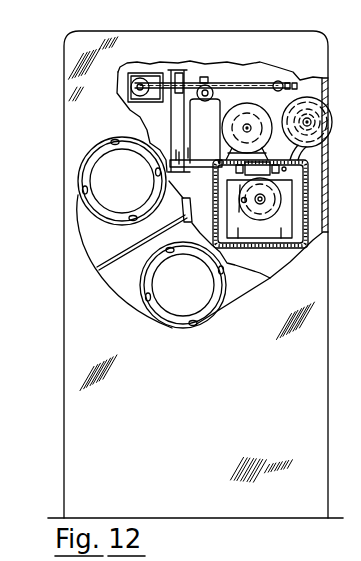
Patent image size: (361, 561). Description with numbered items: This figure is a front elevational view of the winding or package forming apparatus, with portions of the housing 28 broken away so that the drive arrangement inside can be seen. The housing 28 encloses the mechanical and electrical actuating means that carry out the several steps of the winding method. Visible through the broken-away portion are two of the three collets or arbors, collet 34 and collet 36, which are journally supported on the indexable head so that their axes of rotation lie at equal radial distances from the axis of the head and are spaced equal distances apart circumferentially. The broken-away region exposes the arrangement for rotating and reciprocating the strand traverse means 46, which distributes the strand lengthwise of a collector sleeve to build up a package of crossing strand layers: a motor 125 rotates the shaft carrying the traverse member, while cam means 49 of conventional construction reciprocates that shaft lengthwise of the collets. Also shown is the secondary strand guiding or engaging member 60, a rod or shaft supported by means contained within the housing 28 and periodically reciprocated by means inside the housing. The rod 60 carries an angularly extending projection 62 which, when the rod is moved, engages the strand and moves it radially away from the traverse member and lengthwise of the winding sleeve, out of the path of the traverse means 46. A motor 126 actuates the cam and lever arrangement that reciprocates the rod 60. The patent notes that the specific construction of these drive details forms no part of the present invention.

The housing 28 is at (63, 44).
The motor 126 is at (182, 132).
The collet 36 is at (103, 167).
The collet 34 is at (178, 316).
The motor 125 is at (240, 103).
The secondary strand guiding member 60 is at (278, 82).
The angularly extending projection 62 is at (295, 86).
The strand traverse means 46 is at (343, 88).
The cam means 49 is at (281, 193).